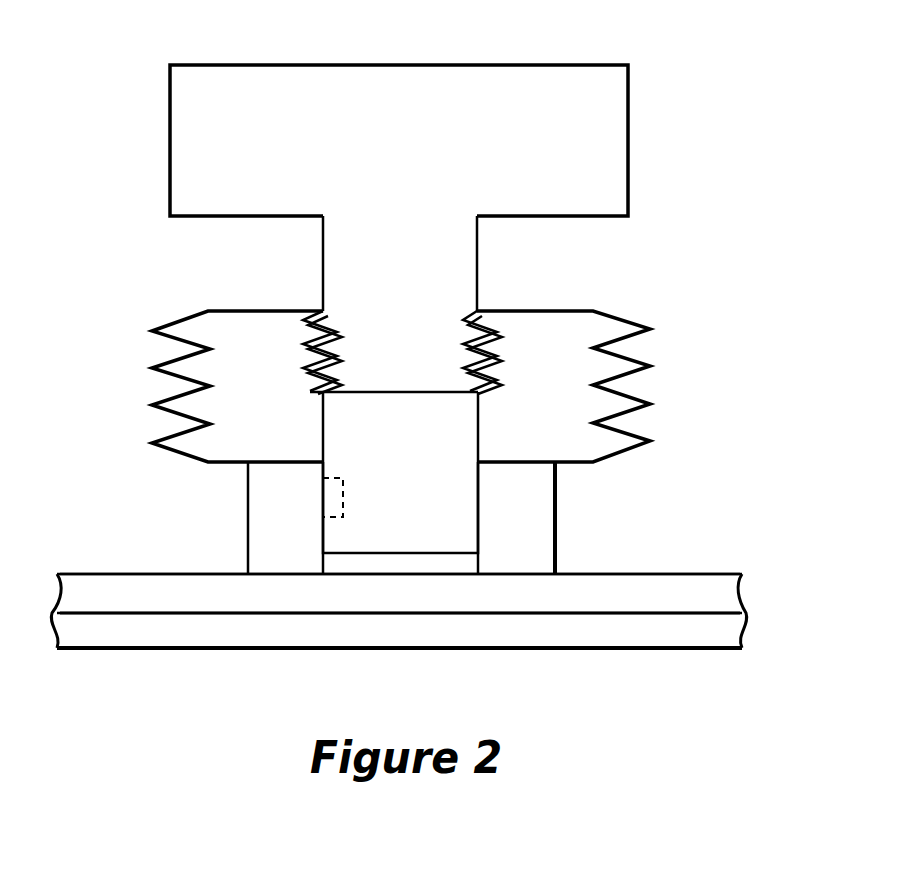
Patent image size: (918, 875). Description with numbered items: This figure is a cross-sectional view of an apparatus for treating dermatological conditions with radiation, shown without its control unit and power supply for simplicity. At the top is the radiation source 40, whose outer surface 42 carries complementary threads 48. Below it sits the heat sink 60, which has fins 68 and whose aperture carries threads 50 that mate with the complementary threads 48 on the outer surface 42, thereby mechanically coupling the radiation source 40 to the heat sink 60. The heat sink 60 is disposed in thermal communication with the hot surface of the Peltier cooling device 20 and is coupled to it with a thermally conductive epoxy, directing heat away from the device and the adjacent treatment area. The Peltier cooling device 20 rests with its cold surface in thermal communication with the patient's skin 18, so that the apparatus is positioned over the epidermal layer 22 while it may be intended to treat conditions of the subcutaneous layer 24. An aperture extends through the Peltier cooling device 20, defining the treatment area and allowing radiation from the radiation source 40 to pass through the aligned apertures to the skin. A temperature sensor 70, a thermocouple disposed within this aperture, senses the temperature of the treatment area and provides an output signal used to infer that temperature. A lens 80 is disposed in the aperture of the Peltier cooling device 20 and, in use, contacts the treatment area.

The radiation source 40 is at (630, 128).
The outer surface 42 is at (478, 253).
The complementary threads 48 is at (470, 356).
The threads 50 is at (500, 330).
The heat sink 60 is at (188, 318).
The fins 68 is at (623, 318).
The temperature sensor 70 is at (330, 500).
The lens 80 is at (386, 553).
The Peltier cooling device 20 is at (557, 512).
The patient's skin 18 is at (672, 571).
The epidermal layer 22 is at (746, 592).
The subcutaneous layer 24 is at (746, 630).